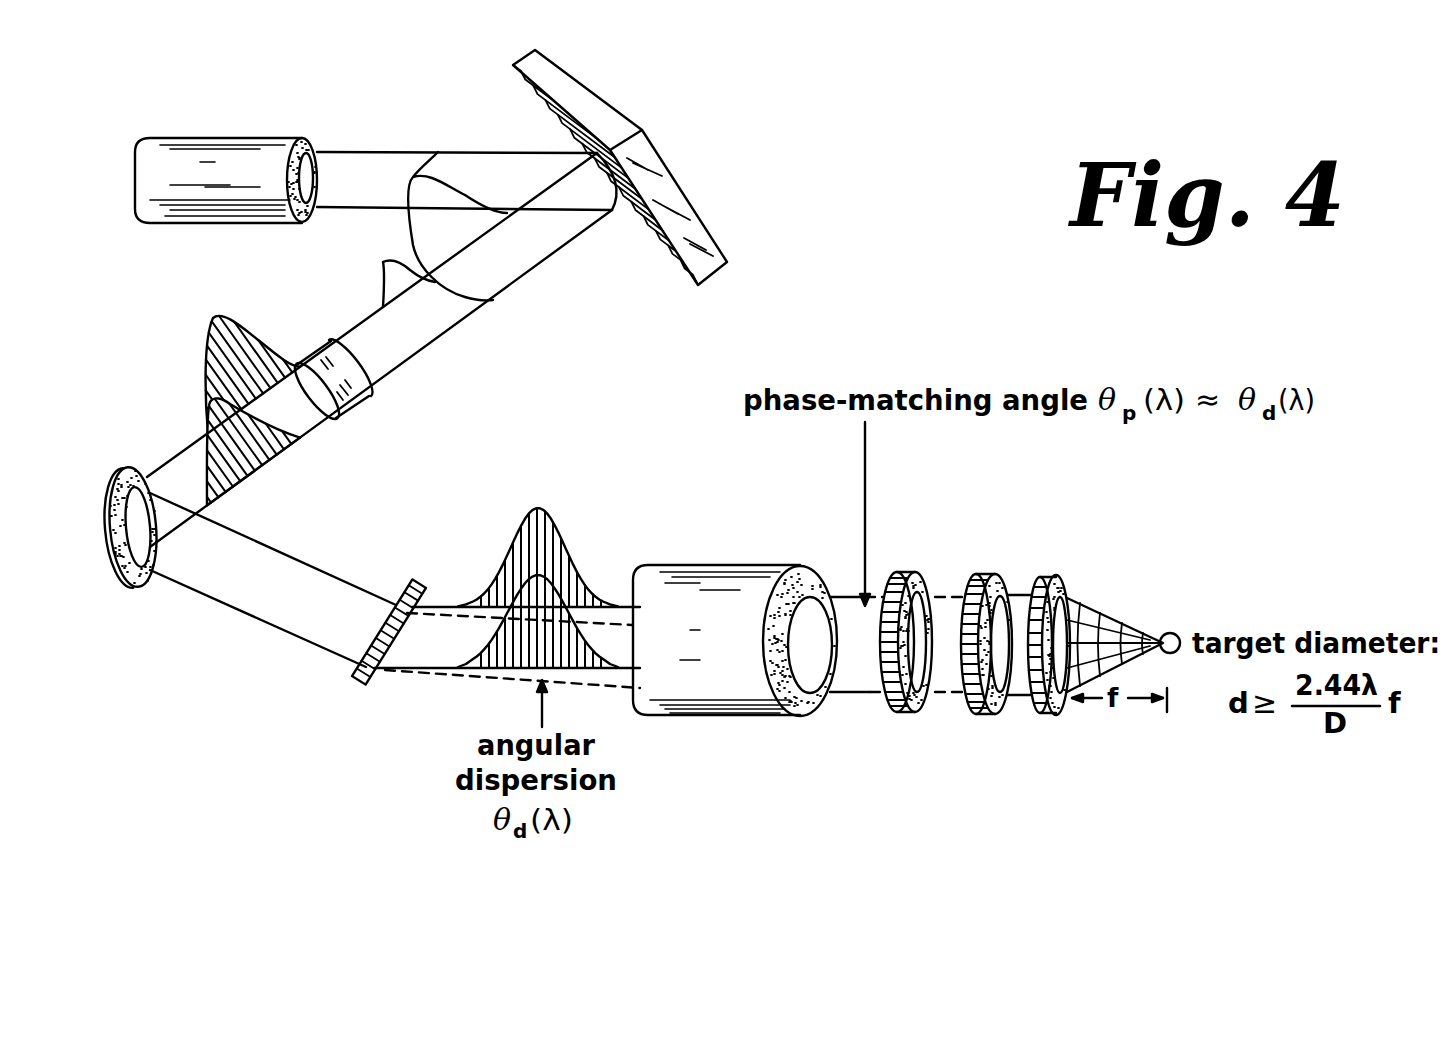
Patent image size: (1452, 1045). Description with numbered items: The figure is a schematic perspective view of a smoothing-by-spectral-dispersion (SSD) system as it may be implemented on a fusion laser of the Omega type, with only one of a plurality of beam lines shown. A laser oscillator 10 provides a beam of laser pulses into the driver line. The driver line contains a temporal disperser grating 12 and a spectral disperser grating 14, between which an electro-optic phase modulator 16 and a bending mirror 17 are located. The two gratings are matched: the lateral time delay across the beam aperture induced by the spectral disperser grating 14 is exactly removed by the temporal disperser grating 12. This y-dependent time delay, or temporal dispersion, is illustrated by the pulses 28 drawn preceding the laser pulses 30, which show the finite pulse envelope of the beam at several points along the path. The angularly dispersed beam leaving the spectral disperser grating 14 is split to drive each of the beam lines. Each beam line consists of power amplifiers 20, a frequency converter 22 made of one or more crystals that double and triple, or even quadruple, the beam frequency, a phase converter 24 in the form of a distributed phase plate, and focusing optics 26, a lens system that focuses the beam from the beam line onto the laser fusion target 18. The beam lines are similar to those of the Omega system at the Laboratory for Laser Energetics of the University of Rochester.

The laser oscillator 10 is at (252, 157).
The temporal disperser grating 12 is at (703, 195).
The spectral disperser grating 14 is at (360, 710).
The electro-optic phase modulator 16 is at (463, 419).
The bending mirror 17 is at (109, 505).
The laser fusion target 18 is at (1180, 632).
The power amplifiers 20 is at (735, 703).
The frequency converter 22 is at (898, 707).
The phase converter 24 is at (992, 574).
The focusing optics 26 is at (1082, 708).
The pulses 28 is at (383, 262).
The laser pulses 30 is at (438, 152).